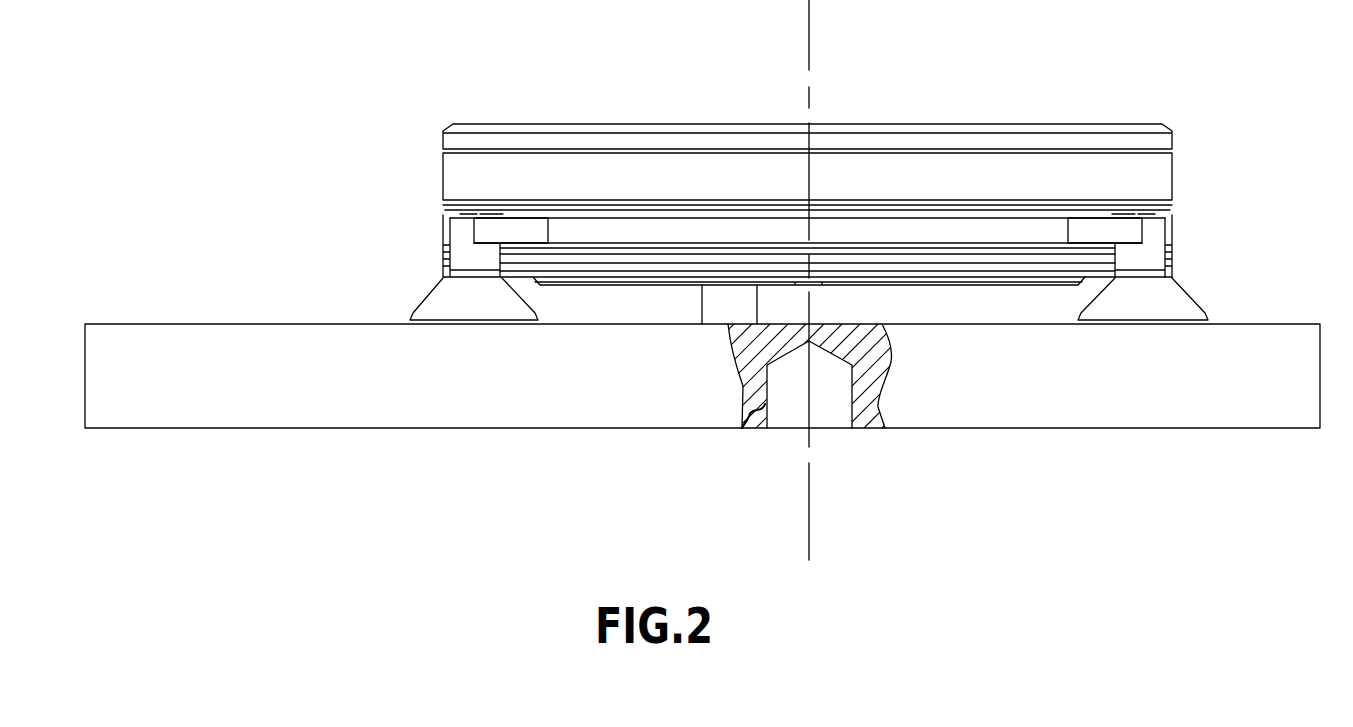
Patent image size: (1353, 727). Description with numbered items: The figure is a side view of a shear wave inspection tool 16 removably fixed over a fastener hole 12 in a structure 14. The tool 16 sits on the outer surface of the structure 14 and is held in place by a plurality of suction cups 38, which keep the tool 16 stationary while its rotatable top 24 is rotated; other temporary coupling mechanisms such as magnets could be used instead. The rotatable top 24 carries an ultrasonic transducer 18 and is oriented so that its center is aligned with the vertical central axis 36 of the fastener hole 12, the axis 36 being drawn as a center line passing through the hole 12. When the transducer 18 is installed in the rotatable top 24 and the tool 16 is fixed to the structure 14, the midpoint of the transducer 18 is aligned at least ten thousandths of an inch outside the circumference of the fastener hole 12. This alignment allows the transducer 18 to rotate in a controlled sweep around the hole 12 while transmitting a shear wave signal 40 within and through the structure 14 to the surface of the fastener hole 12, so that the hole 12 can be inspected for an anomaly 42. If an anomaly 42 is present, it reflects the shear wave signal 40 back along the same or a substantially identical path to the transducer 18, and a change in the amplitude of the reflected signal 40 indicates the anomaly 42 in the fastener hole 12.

The fastener hole 12 is at (825, 402).
The structure 14 is at (175, 388).
The shear wave inspection tool 16 is at (443, 178).
The ultrasonic transducer 18 is at (718, 305).
The rotatable top 24 is at (1130, 122).
The vertical central axis 36 is at (810, 538).
The suction cups 38 is at (448, 303).
The shear wave signal 40 is at (740, 358).
The anomaly 42 is at (758, 432).